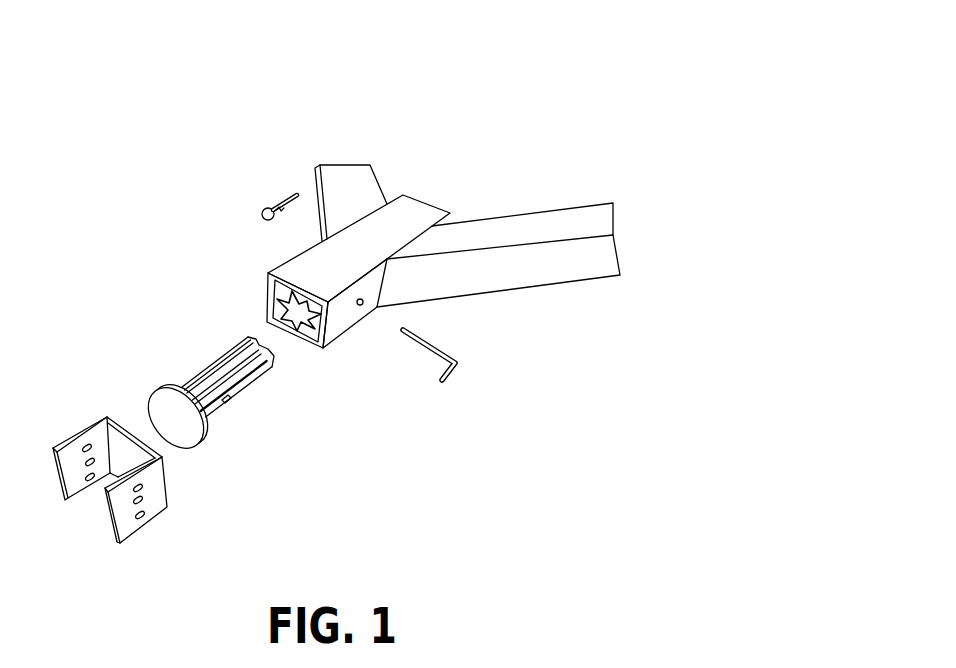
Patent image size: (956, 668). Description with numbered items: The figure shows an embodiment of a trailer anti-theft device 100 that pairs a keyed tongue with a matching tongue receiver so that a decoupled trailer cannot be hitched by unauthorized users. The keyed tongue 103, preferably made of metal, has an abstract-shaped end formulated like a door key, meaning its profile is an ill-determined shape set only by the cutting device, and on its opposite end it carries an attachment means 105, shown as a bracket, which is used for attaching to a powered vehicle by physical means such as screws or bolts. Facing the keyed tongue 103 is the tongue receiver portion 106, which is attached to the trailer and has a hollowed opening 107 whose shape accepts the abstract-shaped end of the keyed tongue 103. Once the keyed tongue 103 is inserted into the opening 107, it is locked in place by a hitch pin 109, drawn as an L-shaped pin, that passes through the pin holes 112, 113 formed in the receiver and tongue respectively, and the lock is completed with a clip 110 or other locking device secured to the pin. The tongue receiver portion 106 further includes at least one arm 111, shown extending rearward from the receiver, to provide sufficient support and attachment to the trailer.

The hitch assembly 100 is at (137, 46).
The keyed tongue 103 is at (197, 377).
The attachment means 105 is at (73, 435).
The tongue receiver portion 106 is at (277, 267).
The opening 107 is at (312, 333).
The hitch pin 109 is at (445, 377).
The clip 110 is at (288, 197).
The arm 111 is at (528, 225).
The pin hole 112 is at (362, 306).
The pin hole 113 is at (225, 402).